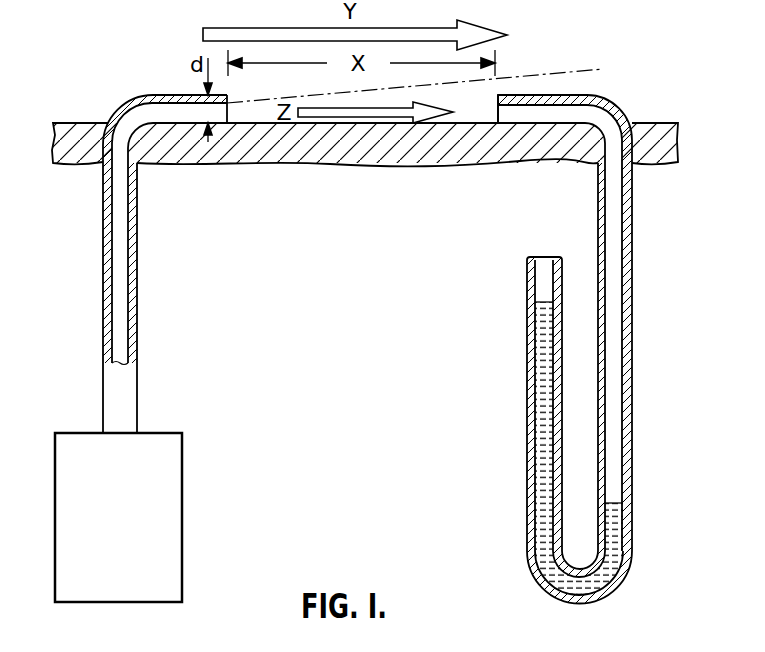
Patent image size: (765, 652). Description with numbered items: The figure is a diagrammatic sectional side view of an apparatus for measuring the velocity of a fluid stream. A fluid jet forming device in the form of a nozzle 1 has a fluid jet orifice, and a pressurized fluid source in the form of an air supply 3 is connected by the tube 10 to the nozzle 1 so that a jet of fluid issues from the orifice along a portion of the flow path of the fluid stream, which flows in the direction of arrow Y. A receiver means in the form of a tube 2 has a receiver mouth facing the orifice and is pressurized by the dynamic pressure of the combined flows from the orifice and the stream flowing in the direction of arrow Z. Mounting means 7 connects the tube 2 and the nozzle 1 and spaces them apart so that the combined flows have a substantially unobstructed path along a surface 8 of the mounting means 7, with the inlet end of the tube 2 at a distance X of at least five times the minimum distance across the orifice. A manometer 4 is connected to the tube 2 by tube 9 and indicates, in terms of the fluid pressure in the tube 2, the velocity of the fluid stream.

The nozzle 1 is at (172, 95).
The tube 2 is at (535, 95).
The air supply 3 is at (162, 432).
The manometer 4 is at (527, 377).
The mounting means 7 is at (650, 129).
The surface 8 is at (477, 123).
The tube 9 is at (598, 204).
The tube 10 is at (137, 259).